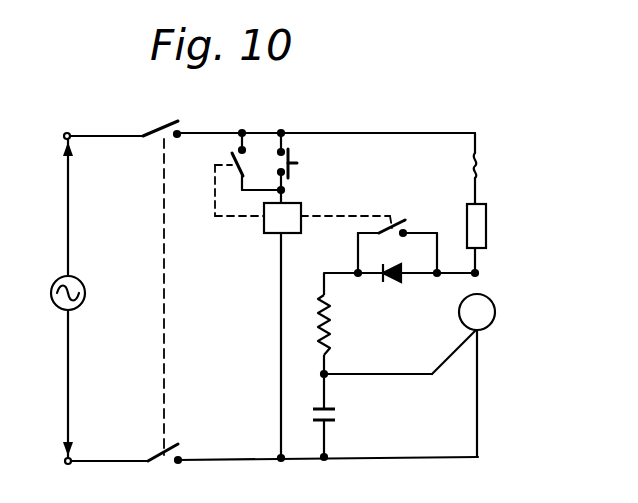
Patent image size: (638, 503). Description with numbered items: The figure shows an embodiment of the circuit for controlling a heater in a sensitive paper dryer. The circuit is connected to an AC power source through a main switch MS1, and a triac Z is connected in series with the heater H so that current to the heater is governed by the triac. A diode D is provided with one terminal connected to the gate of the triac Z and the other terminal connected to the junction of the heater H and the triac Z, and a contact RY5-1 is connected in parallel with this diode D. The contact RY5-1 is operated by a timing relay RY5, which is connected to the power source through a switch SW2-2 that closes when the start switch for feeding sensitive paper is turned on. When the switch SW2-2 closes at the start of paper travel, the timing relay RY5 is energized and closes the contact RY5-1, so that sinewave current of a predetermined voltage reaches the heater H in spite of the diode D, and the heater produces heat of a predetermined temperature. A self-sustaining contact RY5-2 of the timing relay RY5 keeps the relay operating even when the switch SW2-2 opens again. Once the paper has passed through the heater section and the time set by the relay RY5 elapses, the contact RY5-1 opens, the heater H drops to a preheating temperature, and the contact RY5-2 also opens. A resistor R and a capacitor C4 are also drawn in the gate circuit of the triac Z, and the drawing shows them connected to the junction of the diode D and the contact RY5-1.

The main switch MS1 is at (165, 277).
The self-sustaining contact RY5-2 is at (230, 173).
The start switch contact SW2-2 is at (320, 166).
The timing relay RY5 is at (292, 232).
The contact RY5-1 is at (369, 233).
The heater H is at (486, 226).
The diode D is at (392, 288).
The resistor R is at (332, 323).
The triac Z is at (477, 312).
The capacitor C4 is at (337, 415).